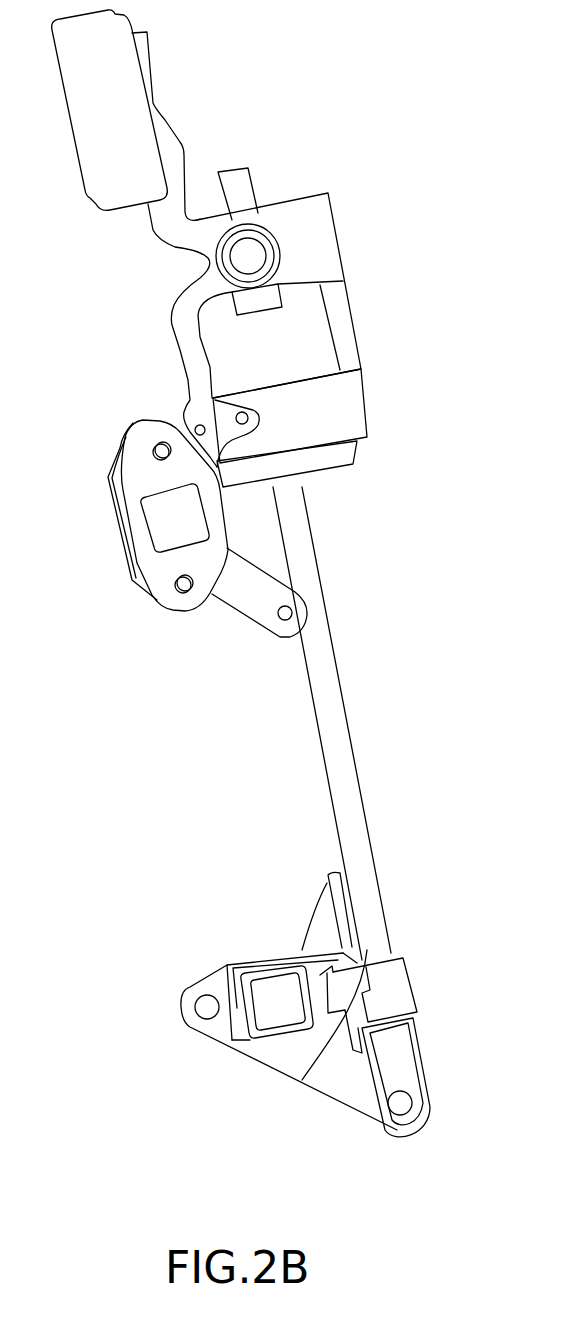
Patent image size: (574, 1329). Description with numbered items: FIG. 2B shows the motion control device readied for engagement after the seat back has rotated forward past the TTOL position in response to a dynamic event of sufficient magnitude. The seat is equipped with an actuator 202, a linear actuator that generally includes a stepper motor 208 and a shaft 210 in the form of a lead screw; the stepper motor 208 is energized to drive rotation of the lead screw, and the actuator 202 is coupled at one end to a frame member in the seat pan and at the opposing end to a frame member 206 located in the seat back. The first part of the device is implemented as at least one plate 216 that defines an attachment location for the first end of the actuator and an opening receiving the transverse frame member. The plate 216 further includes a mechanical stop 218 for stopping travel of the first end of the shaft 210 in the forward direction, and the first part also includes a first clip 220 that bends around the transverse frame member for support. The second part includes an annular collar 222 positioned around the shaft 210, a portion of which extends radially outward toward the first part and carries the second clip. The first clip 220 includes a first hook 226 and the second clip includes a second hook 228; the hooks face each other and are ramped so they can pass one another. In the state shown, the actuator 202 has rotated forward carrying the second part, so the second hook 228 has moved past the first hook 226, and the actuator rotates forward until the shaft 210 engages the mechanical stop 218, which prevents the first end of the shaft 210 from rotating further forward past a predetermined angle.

The actuator 202 is at (284, 162).
The frame member 206 is at (173, 315).
The stepper motor 208 is at (345, 397).
The shaft 210 is at (340, 712).
The plate 216 is at (337, 1087).
The mechanical stop 218 is at (337, 875).
The first clip 220 is at (310, 950).
The annular collar 222 is at (405, 987).
The first hook 226 is at (357, 963).
The second hook 228 is at (303, 1080).